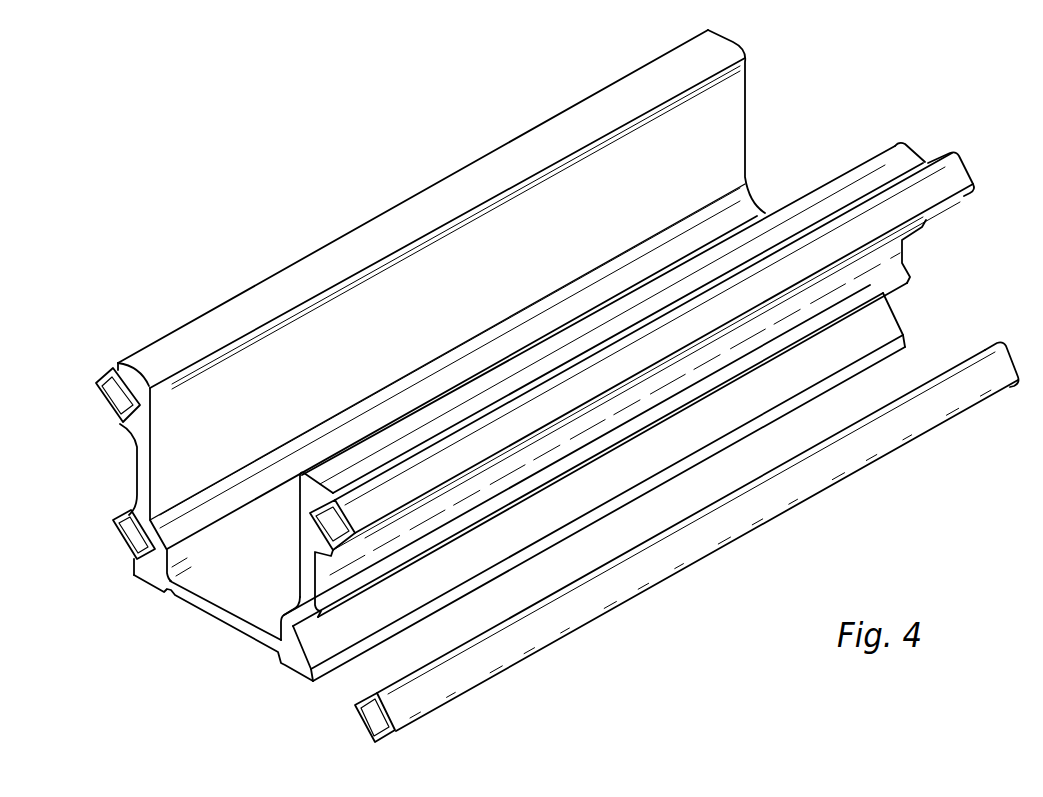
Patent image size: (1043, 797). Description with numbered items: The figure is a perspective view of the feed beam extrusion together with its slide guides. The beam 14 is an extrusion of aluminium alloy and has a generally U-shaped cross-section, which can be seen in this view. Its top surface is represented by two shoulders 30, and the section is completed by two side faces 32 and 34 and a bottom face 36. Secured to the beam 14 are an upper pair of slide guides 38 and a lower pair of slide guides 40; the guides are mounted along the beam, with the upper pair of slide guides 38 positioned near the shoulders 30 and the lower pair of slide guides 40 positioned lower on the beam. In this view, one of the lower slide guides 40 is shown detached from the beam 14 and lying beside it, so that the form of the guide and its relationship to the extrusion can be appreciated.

The beam 14 is at (540, 386).
The shoulders 30 is at (301, 262).
The side face 32 is at (140, 470).
The side face 34 is at (894, 263).
The bottom face 36 is at (213, 622).
The upper pair of slide guides 38 is at (102, 378).
The lower pair of slide guides 40 is at (123, 538).